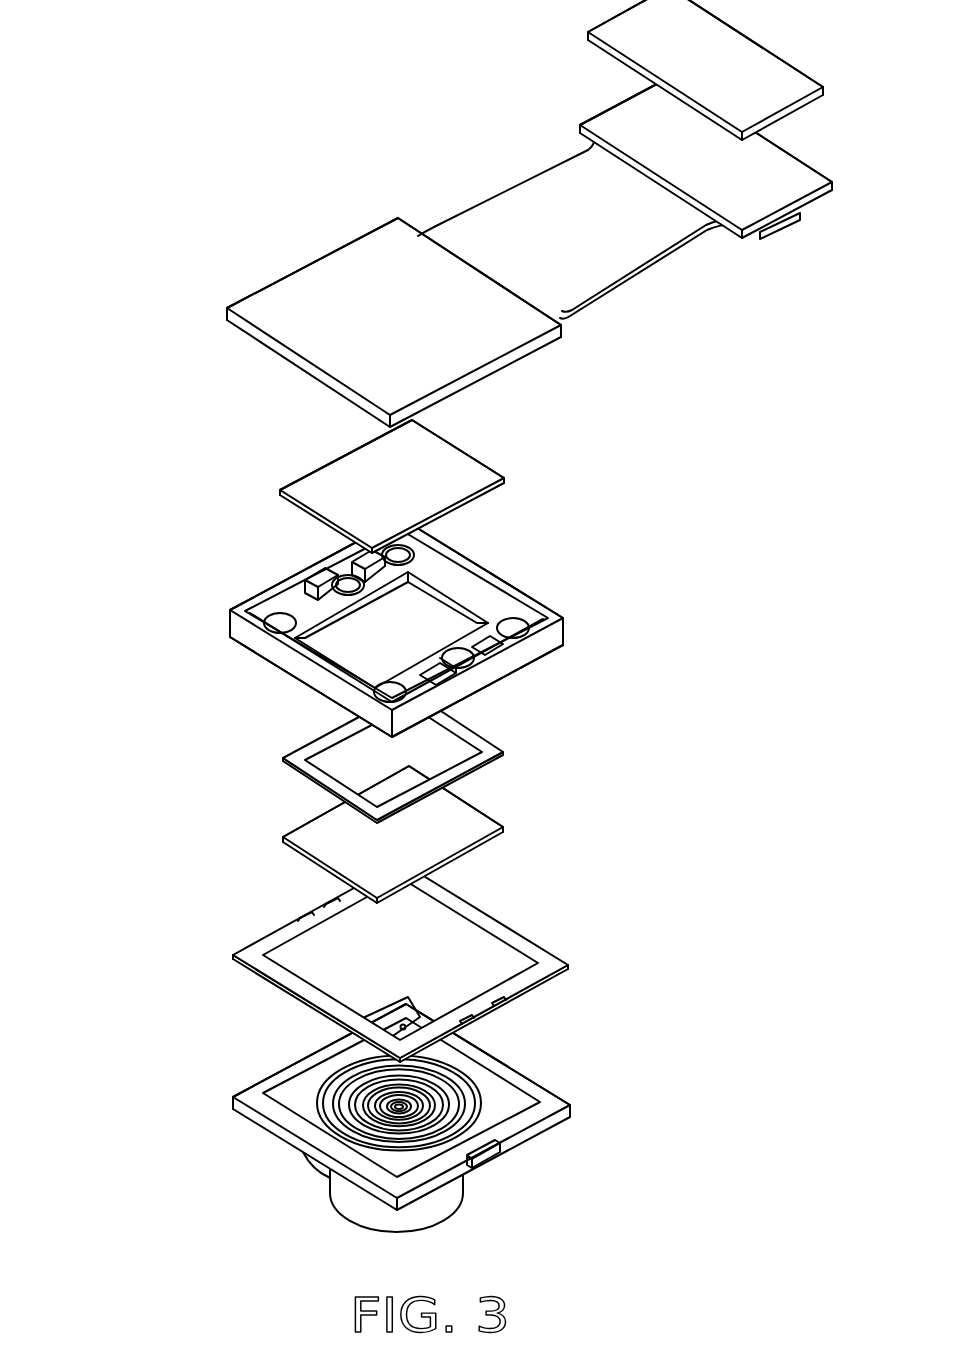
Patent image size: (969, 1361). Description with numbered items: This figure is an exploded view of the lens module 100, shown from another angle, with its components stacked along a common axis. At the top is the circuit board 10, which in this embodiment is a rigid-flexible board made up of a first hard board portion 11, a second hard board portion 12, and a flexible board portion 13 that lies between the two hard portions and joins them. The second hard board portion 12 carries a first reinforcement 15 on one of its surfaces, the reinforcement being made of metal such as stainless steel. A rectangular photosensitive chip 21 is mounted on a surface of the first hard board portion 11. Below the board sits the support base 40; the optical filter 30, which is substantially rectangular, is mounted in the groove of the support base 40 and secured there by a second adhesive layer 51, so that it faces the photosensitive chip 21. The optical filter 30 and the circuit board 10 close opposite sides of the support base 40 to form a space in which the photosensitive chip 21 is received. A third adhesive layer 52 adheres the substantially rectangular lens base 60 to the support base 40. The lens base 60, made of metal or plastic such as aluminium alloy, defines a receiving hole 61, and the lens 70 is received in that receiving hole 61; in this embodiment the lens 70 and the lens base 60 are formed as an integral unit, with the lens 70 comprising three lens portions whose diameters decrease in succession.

The lens module 100 is at (155, 44).
The circuit board 10 is at (752, 311).
The first hard board portion 11 is at (480, 340).
The second hard board portion 12 is at (745, 203).
The flexible board portion 13 is at (578, 267).
The first reinforcement 15 is at (753, 63).
The photosensitive chip 21 is at (473, 480).
The optical filter 30 is at (483, 825).
The support base 40 is at (563, 627).
The second adhesive layer 51 is at (490, 750).
The third adhesive layer 52 is at (548, 963).
The lens base 60 is at (426, 1103).
The receiving hole 61 is at (453, 1098).
The lens 70 is at (450, 1203).